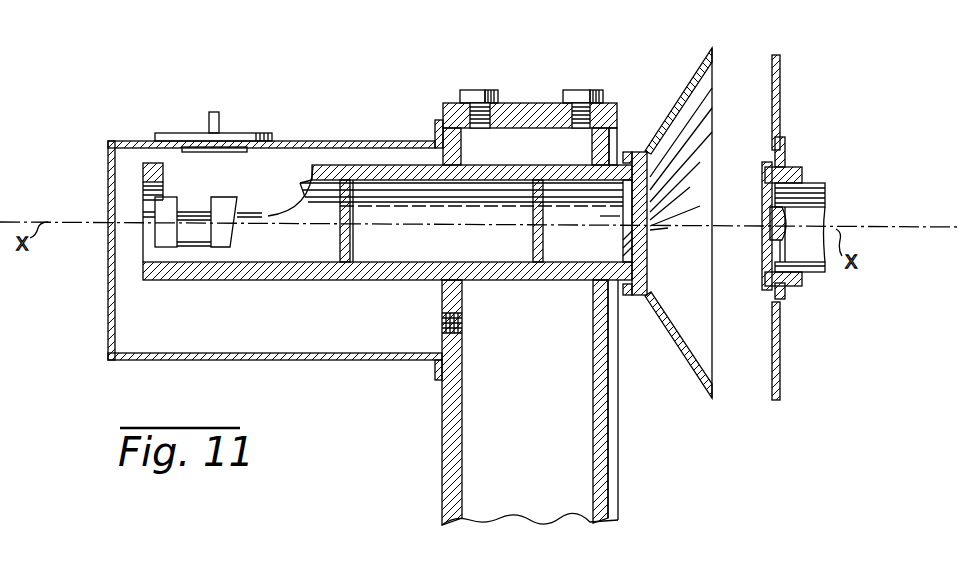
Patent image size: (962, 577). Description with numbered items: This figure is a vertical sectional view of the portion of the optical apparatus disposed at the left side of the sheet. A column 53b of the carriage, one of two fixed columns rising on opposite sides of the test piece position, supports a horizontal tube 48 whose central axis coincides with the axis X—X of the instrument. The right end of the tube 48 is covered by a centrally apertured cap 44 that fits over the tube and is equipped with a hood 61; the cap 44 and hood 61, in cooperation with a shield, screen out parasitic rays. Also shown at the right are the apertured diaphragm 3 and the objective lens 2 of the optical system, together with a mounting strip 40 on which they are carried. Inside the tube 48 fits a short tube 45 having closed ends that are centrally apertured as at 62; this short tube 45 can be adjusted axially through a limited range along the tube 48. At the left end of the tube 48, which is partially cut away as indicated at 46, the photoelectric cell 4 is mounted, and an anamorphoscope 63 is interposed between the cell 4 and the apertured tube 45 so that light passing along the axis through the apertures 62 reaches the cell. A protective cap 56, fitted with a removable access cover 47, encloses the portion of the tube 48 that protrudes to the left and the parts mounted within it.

The objective lens 2 is at (782, 224).
The apertured diaphragm 3 is at (758, 215).
The photoelectric cell 4 is at (172, 203).
The mounting strip 40 is at (782, 155).
The centrally apertured cap 44 is at (627, 188).
The short tube 45 is at (426, 184).
The cut-away portion 46 is at (262, 212).
The removable access cover 47 is at (174, 136).
The horizontal tube 48 is at (308, 282).
The column 53b is at (445, 481).
The protective cap 56 is at (383, 142).
The hood 61 is at (676, 112).
The central aperture 62 is at (338, 225).
The anamorphoscope 63 is at (200, 217).